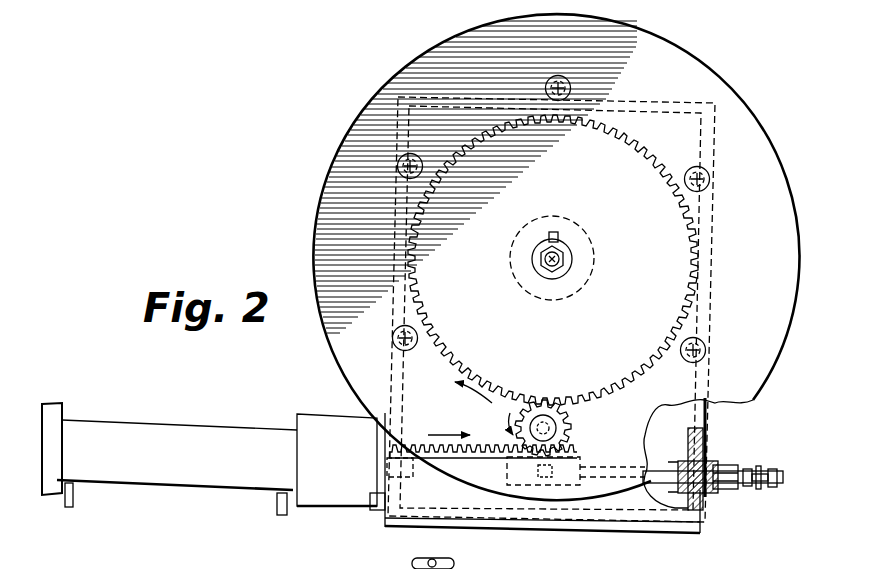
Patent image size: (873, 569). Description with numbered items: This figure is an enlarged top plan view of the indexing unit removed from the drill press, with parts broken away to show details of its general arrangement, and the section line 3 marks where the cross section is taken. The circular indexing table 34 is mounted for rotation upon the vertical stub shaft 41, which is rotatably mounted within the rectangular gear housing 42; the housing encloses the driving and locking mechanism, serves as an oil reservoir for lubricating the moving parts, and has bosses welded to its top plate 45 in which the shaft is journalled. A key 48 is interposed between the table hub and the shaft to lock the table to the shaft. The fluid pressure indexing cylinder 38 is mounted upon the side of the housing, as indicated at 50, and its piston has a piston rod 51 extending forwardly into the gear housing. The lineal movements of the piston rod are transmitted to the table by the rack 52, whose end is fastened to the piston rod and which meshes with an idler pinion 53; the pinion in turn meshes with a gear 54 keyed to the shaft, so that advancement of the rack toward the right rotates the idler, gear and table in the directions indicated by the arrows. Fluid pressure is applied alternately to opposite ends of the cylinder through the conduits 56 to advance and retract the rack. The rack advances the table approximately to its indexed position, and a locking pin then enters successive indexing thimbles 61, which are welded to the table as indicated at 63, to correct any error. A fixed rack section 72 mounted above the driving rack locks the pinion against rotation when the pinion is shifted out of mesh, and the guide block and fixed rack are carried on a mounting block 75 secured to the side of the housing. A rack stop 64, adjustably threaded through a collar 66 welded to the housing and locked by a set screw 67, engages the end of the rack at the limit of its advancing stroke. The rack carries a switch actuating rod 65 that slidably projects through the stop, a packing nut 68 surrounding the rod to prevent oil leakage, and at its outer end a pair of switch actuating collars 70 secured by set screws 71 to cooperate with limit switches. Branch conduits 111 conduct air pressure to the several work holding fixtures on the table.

The section line 3- 3 is at (533, 13).
The indexing table 34 is at (333, 168).
The fluid pressure indexing cylinder 38 is at (151, 430).
The vertical stub shaft 41 is at (572, 260).
The gear housing 42 is at (715, 404).
The top plate 45 is at (627, 510).
The key 48 is at (558, 236).
The cylinder mounting 50 is at (358, 505).
The piston rod 51 is at (408, 477).
The rack 52 is at (487, 442).
The idler pinion 53 is at (570, 428).
The gear 54 is at (700, 318).
The conduits 56 is at (73, 500).
The indexing thimbles 61 is at (572, 88).
The weld 63 is at (176, 559).
The rack stop 64 is at (748, 467).
The switch actuating rod 65 is at (680, 494).
The collar 66 is at (680, 460).
The set screw 67 is at (712, 462).
The packing nut 68 is at (730, 490).
The switch actuating collars 70 is at (748, 487).
The set screws 71 is at (770, 468).
The fixed rack section 72 is at (578, 450).
The mounting block 75 is at (487, 503).
The branch conduits 111 is at (418, 560).